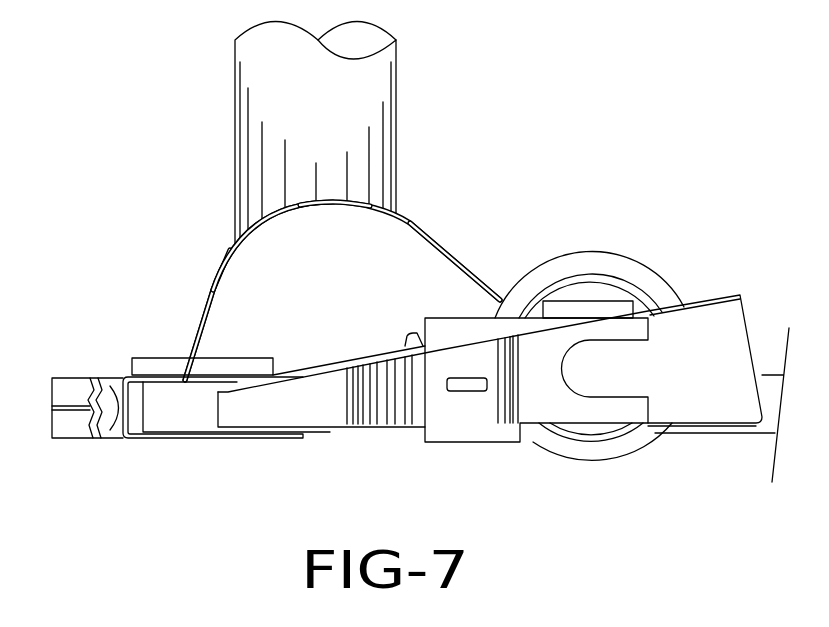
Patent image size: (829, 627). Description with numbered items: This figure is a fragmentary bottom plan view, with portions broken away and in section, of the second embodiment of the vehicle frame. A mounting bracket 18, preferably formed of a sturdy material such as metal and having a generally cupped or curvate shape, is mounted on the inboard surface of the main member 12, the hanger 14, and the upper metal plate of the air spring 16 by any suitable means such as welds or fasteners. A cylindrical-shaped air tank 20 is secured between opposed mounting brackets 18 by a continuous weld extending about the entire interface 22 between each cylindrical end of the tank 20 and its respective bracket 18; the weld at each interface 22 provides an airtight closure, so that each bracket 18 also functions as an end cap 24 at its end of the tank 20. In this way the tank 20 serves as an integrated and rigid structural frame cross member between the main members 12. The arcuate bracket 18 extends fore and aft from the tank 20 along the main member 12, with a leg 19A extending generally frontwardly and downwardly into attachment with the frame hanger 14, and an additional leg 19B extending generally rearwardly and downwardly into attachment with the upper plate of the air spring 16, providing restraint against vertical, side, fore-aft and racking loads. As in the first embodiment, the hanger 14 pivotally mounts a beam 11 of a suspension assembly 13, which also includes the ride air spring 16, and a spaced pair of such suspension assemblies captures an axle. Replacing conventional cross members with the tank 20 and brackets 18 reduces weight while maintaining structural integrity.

The beam 11 is at (400, 437).
The main member 12 is at (68, 378).
The suspension assembly 13 is at (335, 427).
The hanger 14 is at (193, 437).
The air spring 16 is at (627, 264).
The mounting bracket 18 is at (434, 243).
The leg 19A is at (198, 332).
The leg 19B is at (477, 268).
The air tank 20 is at (252, 76).
The interface 22 is at (232, 243).
The end cap 24 is at (337, 204).